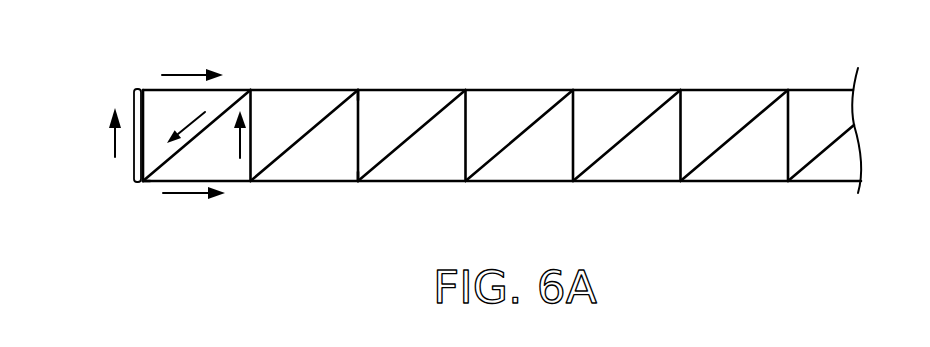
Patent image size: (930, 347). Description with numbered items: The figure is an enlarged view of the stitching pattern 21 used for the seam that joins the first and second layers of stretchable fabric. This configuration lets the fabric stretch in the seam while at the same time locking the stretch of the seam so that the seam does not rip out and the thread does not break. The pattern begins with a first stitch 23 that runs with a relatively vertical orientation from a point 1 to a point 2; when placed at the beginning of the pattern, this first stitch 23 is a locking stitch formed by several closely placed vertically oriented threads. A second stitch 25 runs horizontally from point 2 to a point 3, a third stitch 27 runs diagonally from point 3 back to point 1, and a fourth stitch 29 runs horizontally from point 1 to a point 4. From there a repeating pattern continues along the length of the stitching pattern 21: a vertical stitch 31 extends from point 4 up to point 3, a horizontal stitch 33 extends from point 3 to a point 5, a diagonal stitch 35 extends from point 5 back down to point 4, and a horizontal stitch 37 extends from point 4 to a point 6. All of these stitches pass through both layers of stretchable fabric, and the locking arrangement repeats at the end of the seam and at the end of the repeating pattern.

The point 1 is at (134, 197).
The point 2 is at (113, 120).
The point 3 is at (201, 75).
The point 4 is at (204, 196).
The point 5 is at (360, 88).
The point 6 is at (359, 191).
The stitching pattern 21 is at (457, 134).
The first stitch 23 is at (134, 156).
The second stitch 25 is at (156, 88).
The third stitch 27 is at (184, 147).
The fourth stitch 29 is at (152, 183).
The stitch 31 is at (252, 132).
The stitch 33 is at (293, 88).
The stitch 35 is at (289, 150).
The stitch 37 is at (293, 183).